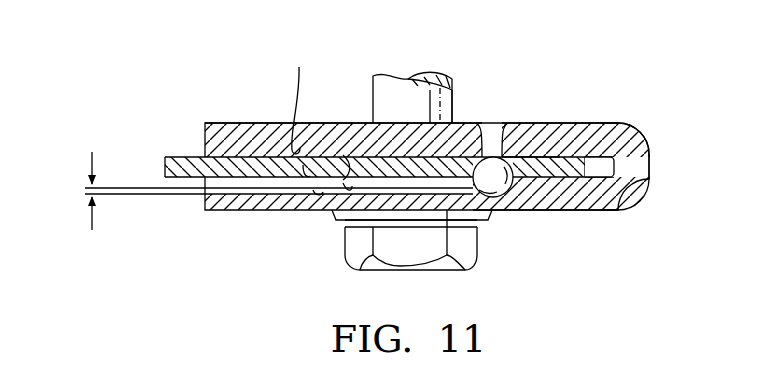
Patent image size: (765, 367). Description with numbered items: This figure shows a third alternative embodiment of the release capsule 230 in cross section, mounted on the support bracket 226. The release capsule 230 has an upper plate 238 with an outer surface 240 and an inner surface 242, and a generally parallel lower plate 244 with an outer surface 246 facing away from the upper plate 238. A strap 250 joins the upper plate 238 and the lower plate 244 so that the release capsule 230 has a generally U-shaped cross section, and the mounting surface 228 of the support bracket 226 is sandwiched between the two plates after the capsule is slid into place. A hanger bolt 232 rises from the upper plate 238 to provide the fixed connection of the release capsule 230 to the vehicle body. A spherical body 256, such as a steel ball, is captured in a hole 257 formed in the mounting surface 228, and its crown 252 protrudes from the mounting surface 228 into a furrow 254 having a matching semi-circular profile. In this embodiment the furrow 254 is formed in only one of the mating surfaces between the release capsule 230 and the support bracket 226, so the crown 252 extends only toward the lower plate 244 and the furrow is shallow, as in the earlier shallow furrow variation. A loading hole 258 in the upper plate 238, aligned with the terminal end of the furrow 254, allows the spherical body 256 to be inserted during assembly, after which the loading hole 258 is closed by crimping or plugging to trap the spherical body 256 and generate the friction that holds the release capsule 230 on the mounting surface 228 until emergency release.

The support bracket 226 is at (163, 158).
The mounting surface 228 is at (259, 155).
The release capsule 230 is at (641, 132).
The hanger bolt 232 is at (453, 86).
The upper plate 238 is at (223, 128).
The outer surface 240 is at (328, 123).
The inner surface 242 is at (315, 120).
The lower plate 244 is at (218, 212).
The outer surface 246 is at (548, 210).
The strap 250 is at (649, 165).
The crown 252 is at (473, 187).
The furrow 254 is at (260, 184).
The spherical body 256 is at (496, 178).
The hole 257 is at (528, 140).
The loading hole 258 is at (490, 140).